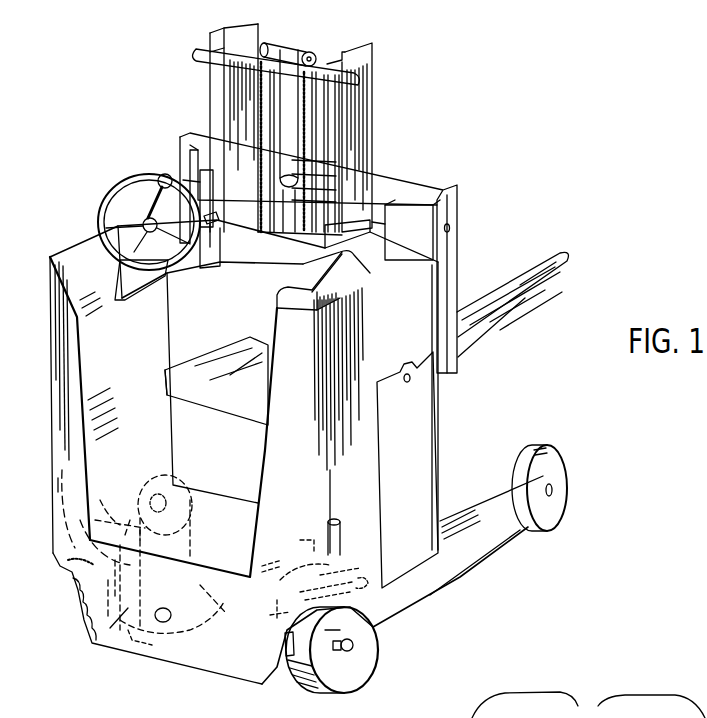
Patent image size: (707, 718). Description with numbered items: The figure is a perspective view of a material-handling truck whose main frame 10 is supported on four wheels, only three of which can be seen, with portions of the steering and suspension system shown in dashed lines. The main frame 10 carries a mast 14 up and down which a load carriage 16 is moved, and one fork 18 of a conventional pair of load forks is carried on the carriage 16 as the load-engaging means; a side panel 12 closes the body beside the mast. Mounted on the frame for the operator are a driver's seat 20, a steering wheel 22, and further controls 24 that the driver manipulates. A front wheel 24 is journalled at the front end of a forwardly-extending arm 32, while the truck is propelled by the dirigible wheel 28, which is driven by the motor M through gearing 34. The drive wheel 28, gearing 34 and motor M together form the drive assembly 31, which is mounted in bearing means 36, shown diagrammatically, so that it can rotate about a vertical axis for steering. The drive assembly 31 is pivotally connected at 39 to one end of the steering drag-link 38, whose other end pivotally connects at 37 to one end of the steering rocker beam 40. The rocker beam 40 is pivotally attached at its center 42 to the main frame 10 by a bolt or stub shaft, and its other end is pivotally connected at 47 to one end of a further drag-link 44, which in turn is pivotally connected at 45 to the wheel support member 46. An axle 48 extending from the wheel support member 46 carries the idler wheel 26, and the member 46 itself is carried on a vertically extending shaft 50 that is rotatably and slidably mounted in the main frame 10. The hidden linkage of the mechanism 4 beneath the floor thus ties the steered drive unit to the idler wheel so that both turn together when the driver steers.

The main frame 10 is at (443, 578).
The side panel 12 is at (418, 486).
The mast 14 is at (360, 102).
The load carriage 16 is at (406, 188).
The fork 18 is at (512, 310).
The driver's seat 20 is at (223, 352).
The steering wheel 22 is at (104, 193).
The controls / front wheel 24 is at (218, 270).
The idler wheel 26 is at (366, 662).
The dirigible wheel 28 is at (72, 613).
The drive assembly 31 is at (52, 556).
The forwardly-extending arm 32 is at (510, 527).
The gearing 34 is at (88, 640).
The bearing means 36 is at (72, 564).
The pivotal connection 37 is at (203, 537).
The steering drag-link 38 is at (224, 630).
The pivotal connection 39 is at (165, 633).
The steering rocker beam 40 is at (278, 560).
The center of rocker beam 42 is at (306, 546).
The further drag-link 44 is at (277, 613).
The pivotal connection 45 is at (288, 645).
The wheel support member 46 is at (328, 632).
The pivotal connection 47 is at (372, 583).
The axle 48 is at (347, 660).
The vertically extending shaft 50 is at (338, 541).
The hidden mechanism 4 is at (120, 575).
The motor M is at (70, 485).